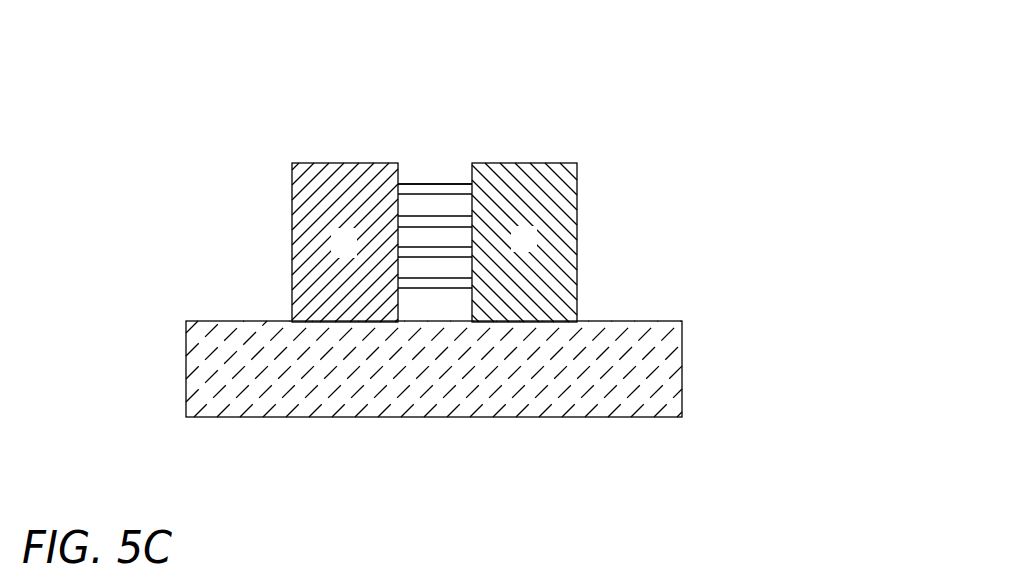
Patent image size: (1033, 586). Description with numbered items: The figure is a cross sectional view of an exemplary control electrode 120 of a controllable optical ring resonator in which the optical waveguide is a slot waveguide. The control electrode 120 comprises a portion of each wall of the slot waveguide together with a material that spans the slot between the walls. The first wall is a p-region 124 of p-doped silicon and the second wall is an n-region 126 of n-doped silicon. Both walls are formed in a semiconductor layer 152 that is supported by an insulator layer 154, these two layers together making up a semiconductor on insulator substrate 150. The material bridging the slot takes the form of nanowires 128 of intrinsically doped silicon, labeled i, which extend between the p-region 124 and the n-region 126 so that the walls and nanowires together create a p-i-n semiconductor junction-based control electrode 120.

The control electrode 120 is at (703, 67).
The p-region 124 is at (292, 240).
The n-region 126 is at (577, 240).
The nanowires 128 is at (428, 172).
The semiconductor on insulator (SOI) substrate 150 is at (155, 163).
The semiconductor layer 152 is at (713, 163).
The insulator layer 154 is at (713, 321).
The intrinsic region i is at (440, 185).